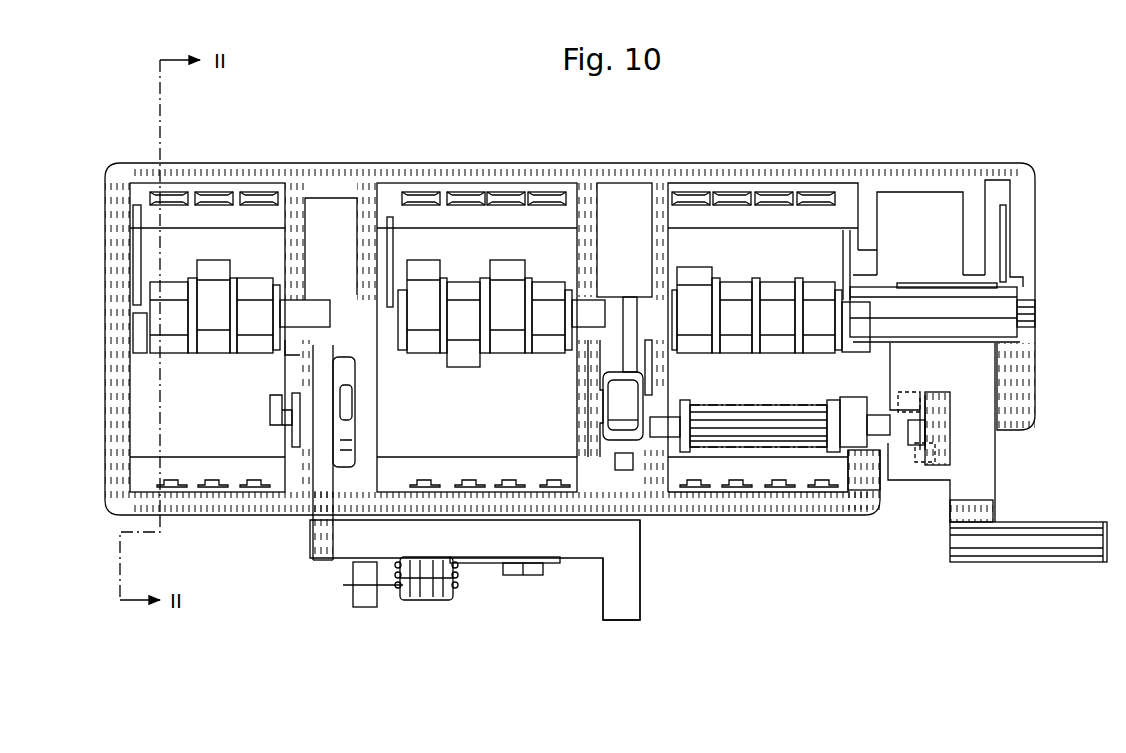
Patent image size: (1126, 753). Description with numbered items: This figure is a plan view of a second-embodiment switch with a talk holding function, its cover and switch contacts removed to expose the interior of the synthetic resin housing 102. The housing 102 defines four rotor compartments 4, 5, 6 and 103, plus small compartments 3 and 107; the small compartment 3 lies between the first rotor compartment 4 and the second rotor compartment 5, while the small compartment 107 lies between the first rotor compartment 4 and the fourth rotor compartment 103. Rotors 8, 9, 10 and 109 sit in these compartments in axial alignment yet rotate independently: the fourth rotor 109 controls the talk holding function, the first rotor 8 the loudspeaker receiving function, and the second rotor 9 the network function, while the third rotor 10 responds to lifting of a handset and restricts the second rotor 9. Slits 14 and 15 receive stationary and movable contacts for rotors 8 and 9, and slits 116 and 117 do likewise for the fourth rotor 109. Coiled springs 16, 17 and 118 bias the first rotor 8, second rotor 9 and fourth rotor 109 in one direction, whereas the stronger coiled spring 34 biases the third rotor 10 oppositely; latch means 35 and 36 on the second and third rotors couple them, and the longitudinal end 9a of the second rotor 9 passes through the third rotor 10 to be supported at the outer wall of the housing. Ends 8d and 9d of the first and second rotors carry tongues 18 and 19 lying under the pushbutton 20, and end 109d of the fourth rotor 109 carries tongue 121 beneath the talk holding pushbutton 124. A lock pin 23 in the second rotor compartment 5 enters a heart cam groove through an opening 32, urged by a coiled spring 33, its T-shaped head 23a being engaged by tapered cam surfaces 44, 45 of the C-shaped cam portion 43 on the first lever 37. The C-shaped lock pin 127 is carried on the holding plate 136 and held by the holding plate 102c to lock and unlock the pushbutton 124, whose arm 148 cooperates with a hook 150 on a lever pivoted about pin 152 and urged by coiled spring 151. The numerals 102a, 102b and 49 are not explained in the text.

The housing 102 is at (640, 178).
The lower housing wall 102a is at (895, 490).
The side housing wall 102b is at (1035, 262).
The holding plate 102c is at (270, 424).
The fourth rotor compartment 103 is at (180, 412).
The small compartment 107 is at (313, 255).
The first rotor compartment 4 is at (463, 412).
The small compartment 3 is at (612, 242).
The second rotor compartment 5 is at (750, 270).
The third rotor compartment 6 is at (917, 242).
The first rotor 8 is at (430, 355).
The longitudinal end 8d is at (600, 312).
The second rotor 9 is at (740, 353).
The longitudinal end 9d is at (628, 315).
The longitudinal end 9a is at (1035, 315).
The third rotor 10 is at (1000, 345).
The slits 14 is at (540, 198).
The slits 15 is at (545, 487).
The coiled spring 16 is at (388, 215).
The coiled spring 17 is at (855, 195).
The tongue 18 is at (600, 350).
The tongue 19 is at (648, 348).
The pushbutton 20 is at (640, 470).
The lock pin 23 is at (825, 490).
The head portion 23a is at (908, 427).
The opening 32 is at (703, 447).
The coiled spring 33 is at (810, 447).
The coiled spring 34 is at (1008, 230).
The latch means 35 is at (855, 350).
The latch means 36 is at (872, 295).
The first lever 37 is at (970, 528).
The cam portion 43 is at (925, 490).
The tapered cam surface 44 is at (920, 402).
The tapered cam surface 45 is at (937, 455).
The bracket 49 is at (590, 540).
The fourth rotor 109 is at (250, 278).
The longitudinal end 109d is at (305, 312).
The slits 116 is at (212, 198).
The slits 117 is at (172, 487).
The coiled spring 118 is at (133, 245).
The tongue 121 is at (285, 355).
The pushbutton 124 is at (310, 462).
The lock pin 127 is at (292, 420).
The holding plate 136 is at (340, 427).
The arm 148 is at (325, 552).
The hook 150 is at (345, 545).
The coiled spring 151 is at (378, 590).
The pin 152 is at (430, 602).